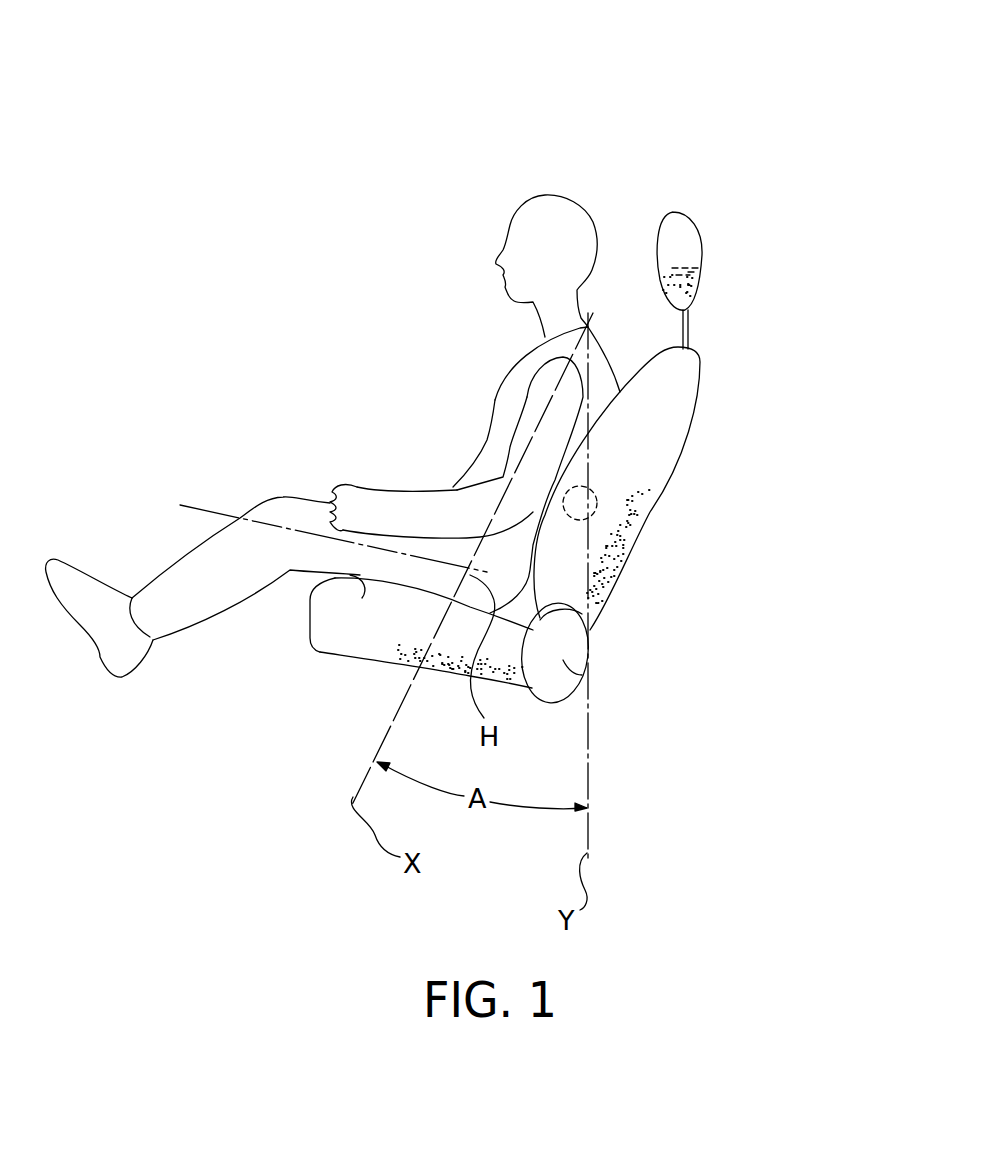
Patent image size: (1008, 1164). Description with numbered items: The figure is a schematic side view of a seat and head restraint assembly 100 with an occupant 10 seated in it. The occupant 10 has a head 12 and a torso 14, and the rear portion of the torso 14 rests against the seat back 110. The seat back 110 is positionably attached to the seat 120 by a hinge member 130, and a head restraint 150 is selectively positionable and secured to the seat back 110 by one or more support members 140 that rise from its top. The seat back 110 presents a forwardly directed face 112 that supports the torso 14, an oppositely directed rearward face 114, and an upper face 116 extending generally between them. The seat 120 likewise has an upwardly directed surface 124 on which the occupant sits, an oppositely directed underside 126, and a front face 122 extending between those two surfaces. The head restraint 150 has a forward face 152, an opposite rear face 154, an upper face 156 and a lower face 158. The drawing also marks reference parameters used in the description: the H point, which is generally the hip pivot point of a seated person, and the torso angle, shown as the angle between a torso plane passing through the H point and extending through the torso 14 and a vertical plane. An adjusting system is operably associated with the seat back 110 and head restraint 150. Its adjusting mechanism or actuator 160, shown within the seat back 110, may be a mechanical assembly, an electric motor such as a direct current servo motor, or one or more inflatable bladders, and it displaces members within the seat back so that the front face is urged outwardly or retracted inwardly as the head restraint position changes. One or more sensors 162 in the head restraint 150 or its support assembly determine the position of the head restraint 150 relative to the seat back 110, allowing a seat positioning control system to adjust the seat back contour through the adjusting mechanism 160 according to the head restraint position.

The occupant 10 is at (388, 127).
The head 12 is at (540, 244).
The torso 14 is at (527, 380).
The seat and head restraint assembly 100 is at (823, 156).
The seat back 110 is at (672, 481).
The forwardly directed face 112 is at (652, 357).
The rearward face 114 is at (640, 550).
The upper face 116 is at (700, 350).
The seat 120 is at (385, 659).
The front face 122 is at (310, 642).
The upwardly directed surface 124 is at (307, 592).
The underside 126 is at (385, 660).
The hinge member 130 is at (570, 668).
The support member 140 is at (690, 335).
The head restraint 150 is at (735, 240).
The forward face 152 is at (651, 247).
The rear face 154 is at (707, 230).
The upper face 156 is at (673, 213).
The lower face 158 is at (695, 307).
The adjusting mechanism 160 is at (597, 492).
The sensor 162 is at (703, 271).